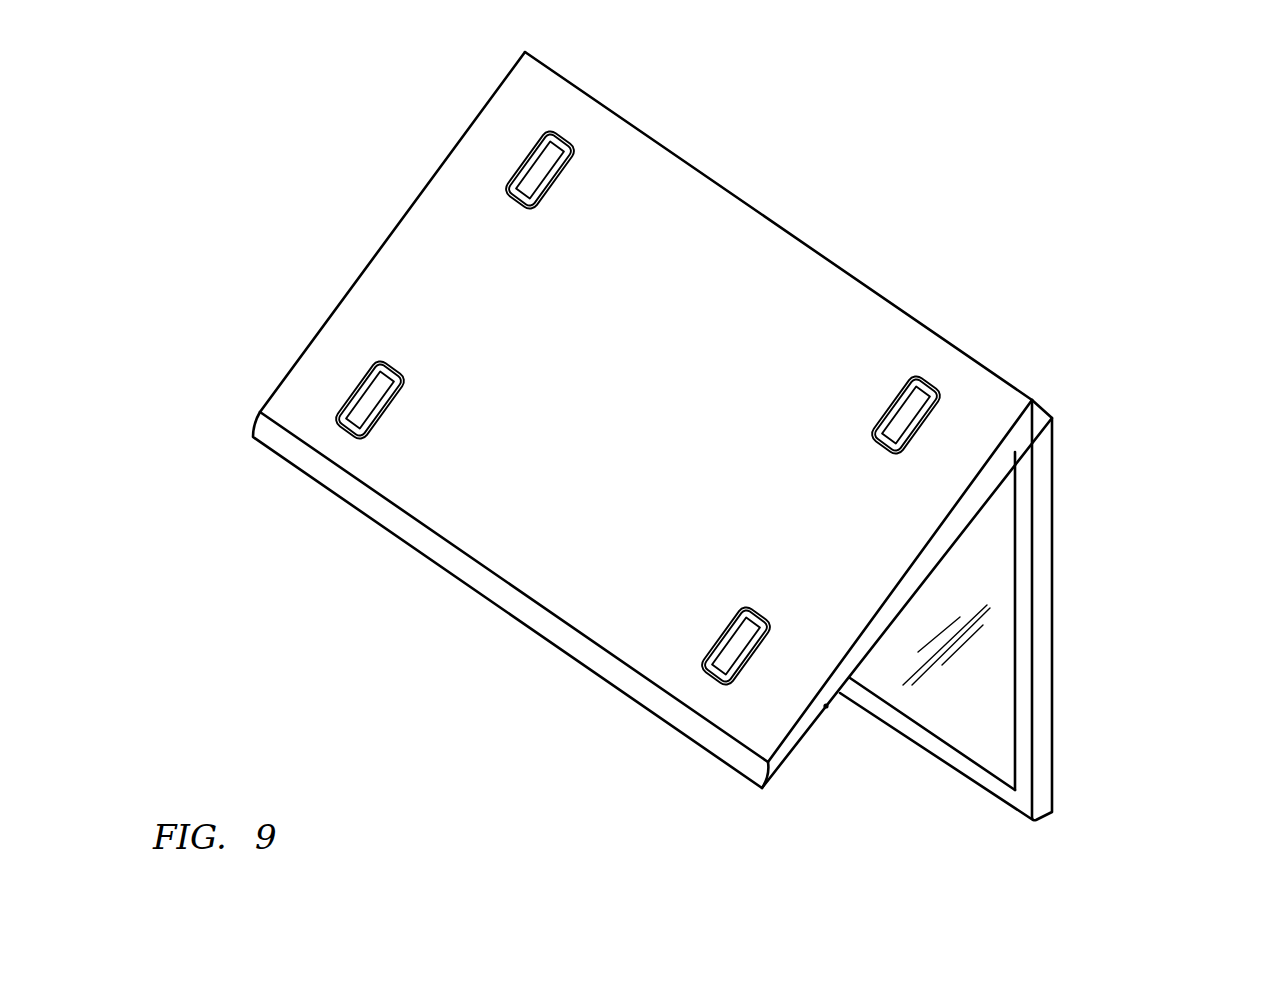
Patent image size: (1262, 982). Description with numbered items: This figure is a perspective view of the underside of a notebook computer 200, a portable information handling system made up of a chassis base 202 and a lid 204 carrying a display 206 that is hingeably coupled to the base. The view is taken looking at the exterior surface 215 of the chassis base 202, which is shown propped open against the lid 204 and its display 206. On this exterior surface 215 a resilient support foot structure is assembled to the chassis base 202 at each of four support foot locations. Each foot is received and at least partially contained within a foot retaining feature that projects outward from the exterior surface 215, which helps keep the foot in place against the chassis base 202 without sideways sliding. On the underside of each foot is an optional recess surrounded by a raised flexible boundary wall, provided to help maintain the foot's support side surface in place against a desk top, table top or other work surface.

The notebook computer 200 is at (1176, 296).
The chassis base 202 is at (513, 607).
The lid 204 is at (1052, 633).
The display 206 is at (998, 675).
The exterior surface of chassis base 215 is at (762, 235).